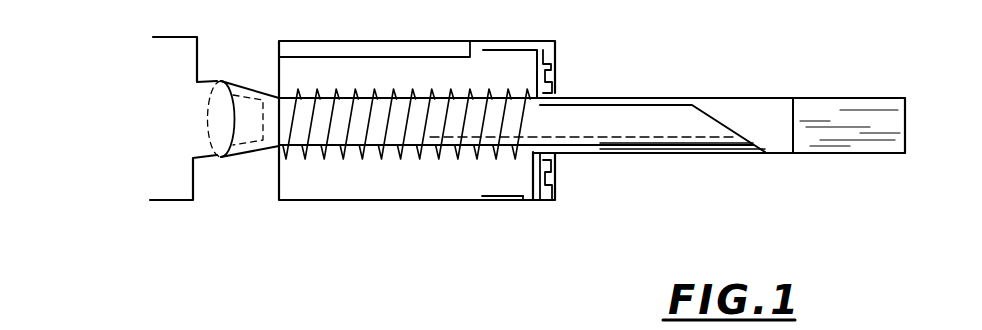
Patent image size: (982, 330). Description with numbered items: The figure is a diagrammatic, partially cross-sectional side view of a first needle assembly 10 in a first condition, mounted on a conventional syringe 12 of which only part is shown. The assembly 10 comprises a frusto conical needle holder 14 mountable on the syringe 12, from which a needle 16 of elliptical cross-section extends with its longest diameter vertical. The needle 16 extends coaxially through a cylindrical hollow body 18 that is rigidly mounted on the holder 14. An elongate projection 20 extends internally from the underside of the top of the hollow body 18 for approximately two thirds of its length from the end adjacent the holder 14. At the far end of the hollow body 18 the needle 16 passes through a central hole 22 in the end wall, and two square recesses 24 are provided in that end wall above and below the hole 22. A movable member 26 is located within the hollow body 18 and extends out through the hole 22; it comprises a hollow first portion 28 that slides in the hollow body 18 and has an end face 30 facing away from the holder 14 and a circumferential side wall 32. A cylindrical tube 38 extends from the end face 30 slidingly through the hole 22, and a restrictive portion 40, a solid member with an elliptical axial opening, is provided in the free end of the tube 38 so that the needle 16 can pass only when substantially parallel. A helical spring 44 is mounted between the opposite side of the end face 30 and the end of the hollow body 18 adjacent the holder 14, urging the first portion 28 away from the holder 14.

The needle assembly 10 is at (350, 205).
The syringe 12 is at (193, 200).
The needle holder 14 is at (249, 88).
The needle 16 is at (730, 132).
The hollow body 18 is at (478, 46).
The elongate projection 20 is at (358, 54).
The central hole 22 is at (560, 155).
The square recesses 24 is at (548, 72).
The movable member 26 is at (506, 202).
The first portion 28 is at (522, 203).
The end face 30 is at (553, 192).
The circumferential side wall 32 is at (493, 199).
The cylindrical tube 38 is at (786, 155).
The restrictive portion 40 is at (880, 128).
The helical spring 44 is at (306, 152).